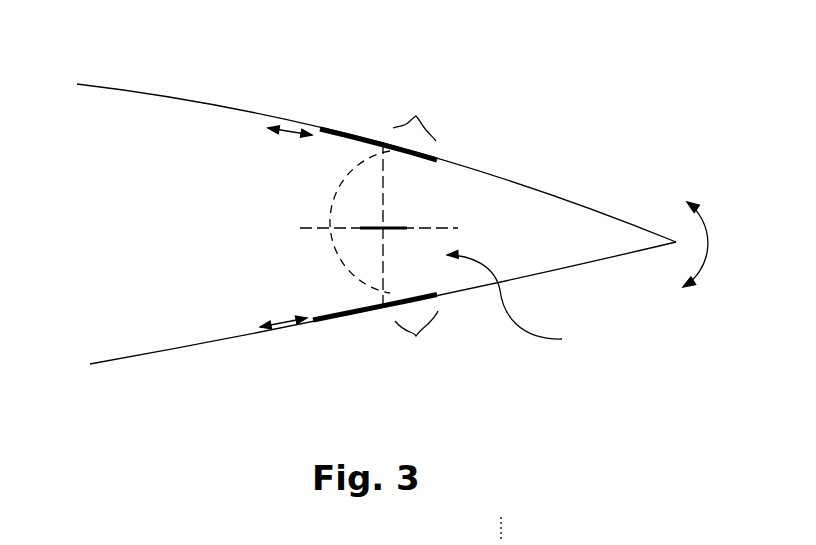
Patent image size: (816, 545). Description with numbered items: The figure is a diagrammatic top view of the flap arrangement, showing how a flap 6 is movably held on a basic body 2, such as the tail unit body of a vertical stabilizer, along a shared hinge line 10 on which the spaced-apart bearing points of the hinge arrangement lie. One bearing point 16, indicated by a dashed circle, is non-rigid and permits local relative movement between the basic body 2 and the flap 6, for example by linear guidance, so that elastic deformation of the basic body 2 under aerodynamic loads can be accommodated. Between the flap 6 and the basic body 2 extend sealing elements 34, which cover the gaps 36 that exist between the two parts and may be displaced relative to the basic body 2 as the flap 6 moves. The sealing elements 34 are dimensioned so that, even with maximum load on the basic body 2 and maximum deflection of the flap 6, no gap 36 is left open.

The basic body 2 is at (240, 128).
The flap 6 is at (563, 227).
The hinge line 10 is at (395, 212).
The bearing point 16 is at (520, 300).
The sealing elements 34 is at (364, 131).
The gaps 36 is at (417, 117).